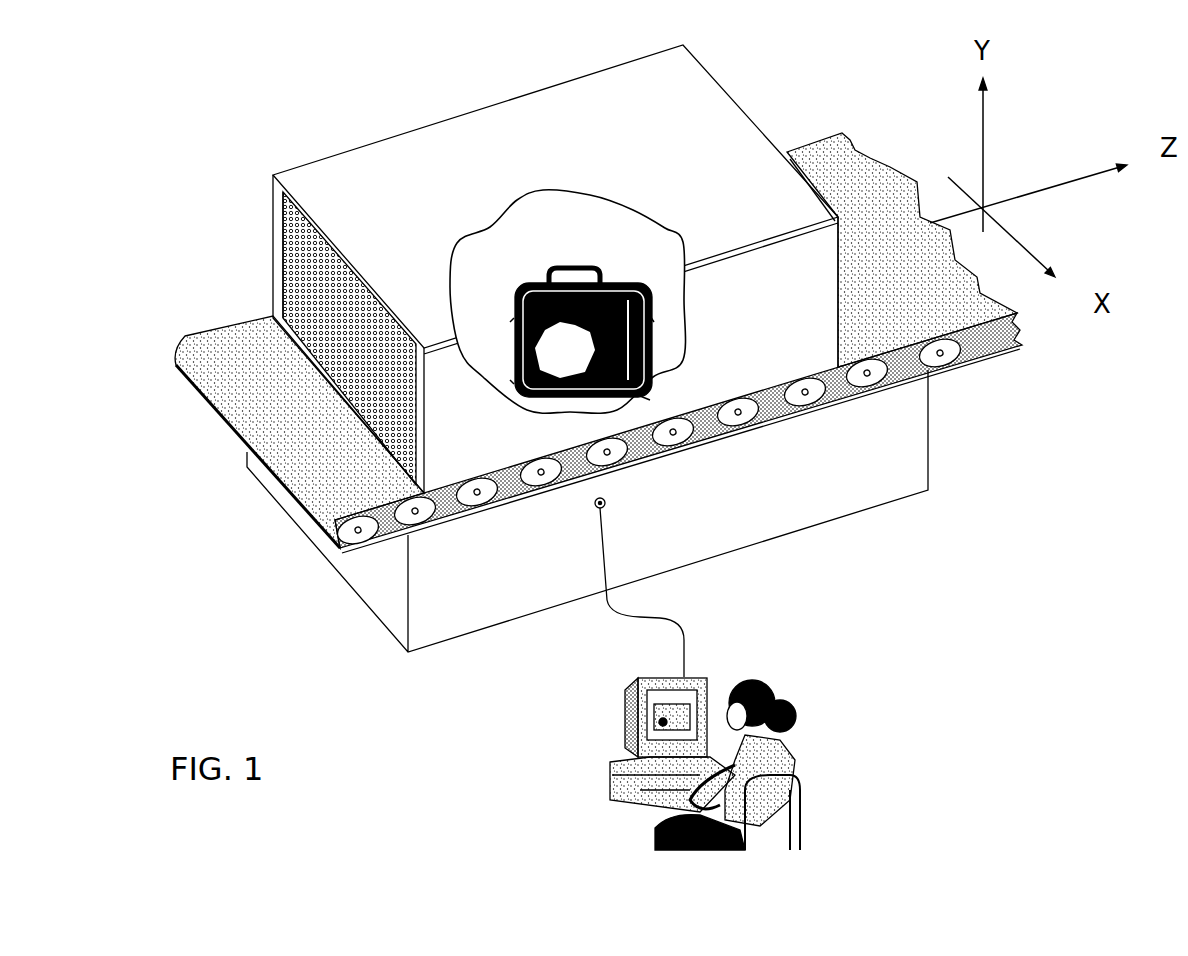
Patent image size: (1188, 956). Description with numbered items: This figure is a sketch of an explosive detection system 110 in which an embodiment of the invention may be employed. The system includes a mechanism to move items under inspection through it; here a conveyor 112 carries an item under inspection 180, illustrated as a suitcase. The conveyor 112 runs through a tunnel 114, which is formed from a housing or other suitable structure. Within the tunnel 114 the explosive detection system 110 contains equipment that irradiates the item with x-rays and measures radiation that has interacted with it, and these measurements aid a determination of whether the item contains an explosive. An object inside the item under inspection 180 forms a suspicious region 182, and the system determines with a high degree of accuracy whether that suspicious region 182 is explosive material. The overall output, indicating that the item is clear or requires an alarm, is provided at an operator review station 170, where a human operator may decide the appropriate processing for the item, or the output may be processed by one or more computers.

The explosive detection system 110 is at (405, 622).
The conveyor 112 is at (238, 333).
The tunnel 114 is at (290, 254).
The operator review station 170 is at (595, 758).
The item under inspection 180 is at (528, 389).
The suspicious region 182 is at (633, 393).